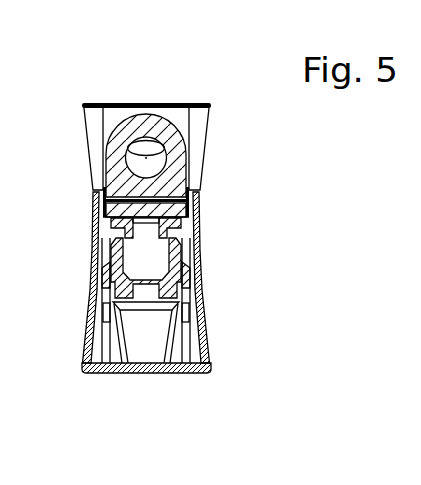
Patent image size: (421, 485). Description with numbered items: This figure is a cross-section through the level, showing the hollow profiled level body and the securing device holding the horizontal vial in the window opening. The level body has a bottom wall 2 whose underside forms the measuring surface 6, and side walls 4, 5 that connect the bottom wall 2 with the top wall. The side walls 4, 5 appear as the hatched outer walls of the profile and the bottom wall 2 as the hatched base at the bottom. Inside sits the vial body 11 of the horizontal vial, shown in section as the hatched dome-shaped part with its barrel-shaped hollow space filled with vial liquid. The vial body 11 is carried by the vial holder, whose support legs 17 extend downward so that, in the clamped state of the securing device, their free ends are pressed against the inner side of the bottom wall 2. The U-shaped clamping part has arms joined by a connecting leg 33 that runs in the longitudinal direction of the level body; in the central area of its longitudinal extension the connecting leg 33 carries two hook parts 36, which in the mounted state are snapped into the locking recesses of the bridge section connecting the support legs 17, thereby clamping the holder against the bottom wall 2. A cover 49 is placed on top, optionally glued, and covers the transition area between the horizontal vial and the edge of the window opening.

The cover 49 is at (197, 133).
The vial body 11 is at (173, 167).
The side wall 4 is at (93, 226).
The side wall 5 is at (200, 235).
The hook part 36 is at (181, 253).
The support leg 17 is at (185, 352).
The connecting leg 33 is at (122, 363).
The bottom wall 2 is at (178, 373).
The measuring surface 6 is at (149, 373).